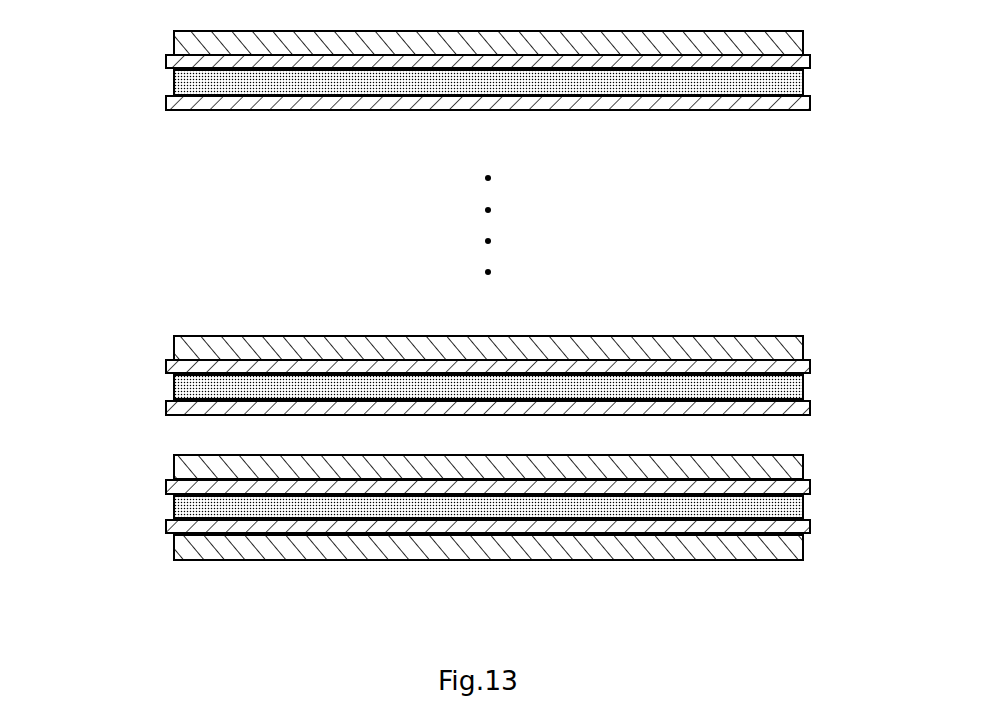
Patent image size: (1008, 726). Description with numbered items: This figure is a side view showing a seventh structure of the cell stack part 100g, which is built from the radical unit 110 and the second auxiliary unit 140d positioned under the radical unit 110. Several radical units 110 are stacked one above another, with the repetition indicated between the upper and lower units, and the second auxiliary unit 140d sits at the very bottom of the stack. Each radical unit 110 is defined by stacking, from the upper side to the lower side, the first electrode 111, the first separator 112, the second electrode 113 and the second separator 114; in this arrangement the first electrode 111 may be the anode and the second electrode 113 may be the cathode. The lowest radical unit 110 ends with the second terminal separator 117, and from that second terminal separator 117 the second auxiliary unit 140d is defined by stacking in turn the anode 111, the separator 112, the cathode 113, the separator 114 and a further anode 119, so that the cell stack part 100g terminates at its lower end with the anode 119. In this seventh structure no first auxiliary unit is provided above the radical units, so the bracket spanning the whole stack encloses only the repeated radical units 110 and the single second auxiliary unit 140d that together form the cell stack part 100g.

The cell stack part 100g is at (817, 37).
The radical unit 110 is at (85, 40).
The first electrode 111 is at (183, 49).
The first separator 112 is at (176, 66).
The second electrode 113 is at (183, 89).
The second separator 114 is at (176, 106).
The second terminal separator 117 is at (442, 390).
The anode 119 is at (183, 546).
The second auxiliary unit 140d is at (82, 466).